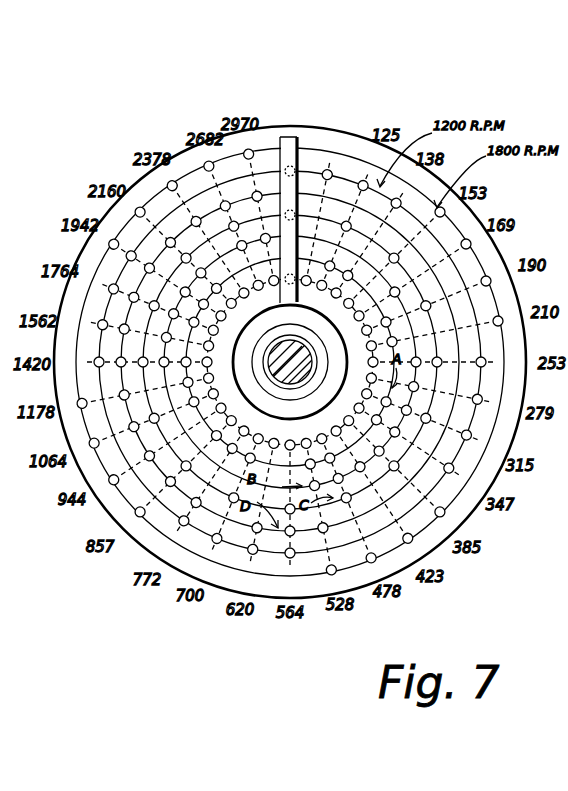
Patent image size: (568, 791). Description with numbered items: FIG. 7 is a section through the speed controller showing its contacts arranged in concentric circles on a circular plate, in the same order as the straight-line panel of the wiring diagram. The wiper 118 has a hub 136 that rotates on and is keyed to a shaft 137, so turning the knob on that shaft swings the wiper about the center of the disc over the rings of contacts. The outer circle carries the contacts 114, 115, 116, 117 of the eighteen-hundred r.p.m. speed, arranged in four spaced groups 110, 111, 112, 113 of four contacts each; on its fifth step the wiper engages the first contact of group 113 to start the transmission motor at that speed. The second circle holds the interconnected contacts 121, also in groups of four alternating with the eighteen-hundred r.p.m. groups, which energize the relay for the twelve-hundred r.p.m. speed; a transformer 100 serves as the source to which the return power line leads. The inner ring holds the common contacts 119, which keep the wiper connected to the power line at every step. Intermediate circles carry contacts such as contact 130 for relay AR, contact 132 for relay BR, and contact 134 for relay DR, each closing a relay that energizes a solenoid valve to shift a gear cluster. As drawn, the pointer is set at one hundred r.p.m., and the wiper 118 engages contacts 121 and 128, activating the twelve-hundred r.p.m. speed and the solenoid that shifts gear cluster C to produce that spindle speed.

The transformer 100 is at (287, 136).
The group of contacts 110 is at (187, 158).
The group of contacts 111 is at (60, 530).
The group of contacts 112 is at (428, 538).
The group of contacts 113 is at (493, 258).
The contact 114 is at (445, 211).
The contact 115 is at (471, 244).
The contact 116 is at (491, 281).
The contact 117 is at (503, 321).
The wiper 118 is at (292, 136).
The common contacts 119 is at (297, 291).
The contacts 121 is at (295, 166).
The contact 128 is at (296, 216).
The contact 130 is at (391, 322).
The contact 132 is at (437, 356).
The contact 134 is at (296, 529).
The hub 136 is at (250, 332).
The shaft 137 is at (313, 340).